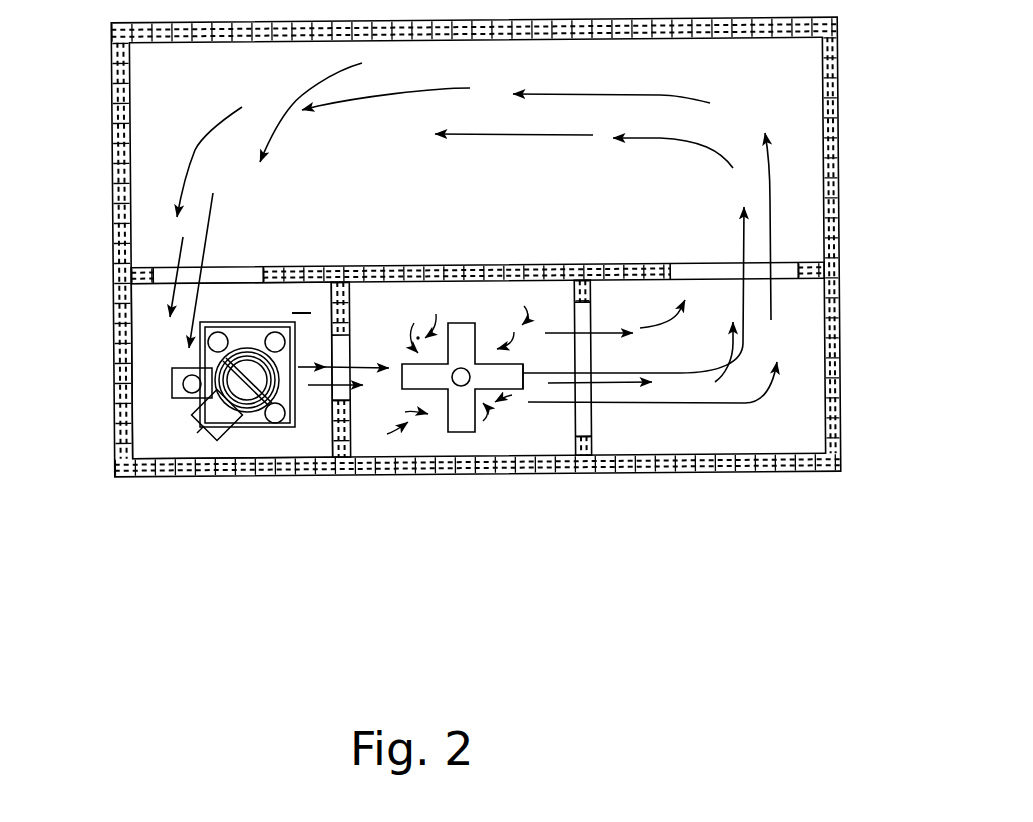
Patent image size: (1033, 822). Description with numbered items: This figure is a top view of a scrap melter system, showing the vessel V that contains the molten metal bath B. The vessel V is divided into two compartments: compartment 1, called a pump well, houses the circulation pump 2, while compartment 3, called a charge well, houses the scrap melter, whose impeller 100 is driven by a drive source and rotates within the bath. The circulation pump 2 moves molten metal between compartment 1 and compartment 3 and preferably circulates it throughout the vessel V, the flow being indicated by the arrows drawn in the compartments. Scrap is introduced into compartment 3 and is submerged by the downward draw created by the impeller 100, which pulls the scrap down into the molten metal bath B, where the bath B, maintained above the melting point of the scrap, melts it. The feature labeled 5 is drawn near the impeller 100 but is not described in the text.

The compartment (pump well) 1 is at (147, 412).
The circulation pump 2 is at (248, 417).
The compartment (charge well) 3 is at (497, 293).
The air inlet / discharge openings 5 is at (493, 438).
The impeller 100 is at (509, 369).
The molten metal bath B is at (452, 190).
The vessel V is at (843, 93).